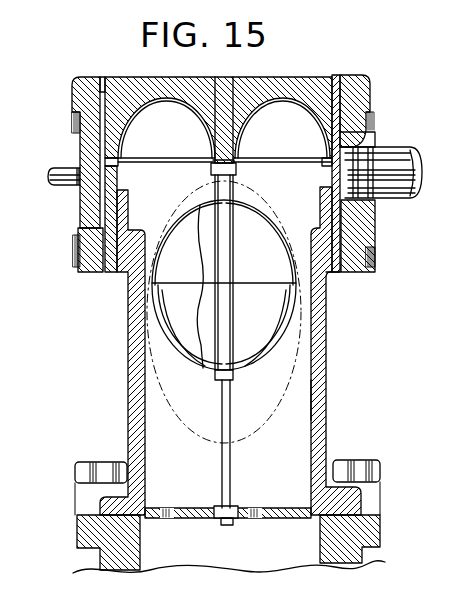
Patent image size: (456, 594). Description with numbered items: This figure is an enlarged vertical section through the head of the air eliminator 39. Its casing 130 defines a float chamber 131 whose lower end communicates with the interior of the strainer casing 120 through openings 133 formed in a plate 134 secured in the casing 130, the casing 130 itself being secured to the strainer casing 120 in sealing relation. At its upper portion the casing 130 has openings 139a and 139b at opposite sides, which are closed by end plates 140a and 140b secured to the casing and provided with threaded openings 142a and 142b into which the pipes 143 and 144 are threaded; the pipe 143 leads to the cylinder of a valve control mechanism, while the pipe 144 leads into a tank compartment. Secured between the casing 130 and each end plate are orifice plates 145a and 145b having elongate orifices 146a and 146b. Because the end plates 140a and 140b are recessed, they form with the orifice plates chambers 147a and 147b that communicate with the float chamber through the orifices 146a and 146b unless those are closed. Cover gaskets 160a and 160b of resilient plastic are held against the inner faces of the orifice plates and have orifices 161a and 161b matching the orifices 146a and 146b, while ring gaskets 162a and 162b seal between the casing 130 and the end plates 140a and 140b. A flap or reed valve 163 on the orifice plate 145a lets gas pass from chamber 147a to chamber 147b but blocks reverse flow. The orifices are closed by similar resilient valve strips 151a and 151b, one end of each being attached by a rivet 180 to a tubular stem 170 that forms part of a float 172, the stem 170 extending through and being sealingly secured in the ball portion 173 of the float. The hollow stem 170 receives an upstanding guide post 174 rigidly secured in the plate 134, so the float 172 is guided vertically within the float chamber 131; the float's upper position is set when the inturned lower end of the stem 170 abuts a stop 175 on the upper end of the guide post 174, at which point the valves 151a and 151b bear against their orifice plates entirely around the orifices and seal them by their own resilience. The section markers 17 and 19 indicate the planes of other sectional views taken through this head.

The section line 17- 17 is at (432, 170).
The section line 19- 19 is at (343, 297).
The air eliminator 39 is at (66, 398).
The strainer casing 120 is at (105, 564).
The casing 130 is at (324, 431).
The float chamber 131 is at (312, 398).
The openings 133 is at (292, 518).
The plate 134 is at (240, 508).
The opening 139a is at (116, 124).
The opening 139b is at (328, 112).
The end plate 140a is at (88, 112).
The end plate 140b is at (362, 96).
The opening 142a is at (82, 208).
The opening 142b is at (364, 214).
The pipe 143 is at (66, 168).
The pipe 144 is at (403, 150).
The orifice plate 145a is at (112, 273).
The orifice plate 145b is at (341, 78).
The orifice 146a is at (183, 186).
The orifice 146b is at (256, 187).
The chamber 147a is at (96, 232).
The chamber 147b is at (363, 236).
The valve 151a is at (186, 101).
The valve 151b is at (285, 101).
The cover gasket 160a is at (110, 77).
The cover gasket 160b is at (332, 77).
The orifice 161a is at (116, 174).
The orifice 161b is at (331, 171).
The ring gasket 162a is at (105, 78).
The ring gasket 162b is at (341, 274).
The flap or reed valve 163 is at (366, 139).
The tubular stem 170 is at (233, 233).
The float 172 is at (269, 373).
The ball portion 173 is at (183, 358).
The guide post 174 is at (221, 466).
The stop 175 is at (217, 381).
The rivet 180 is at (229, 168).